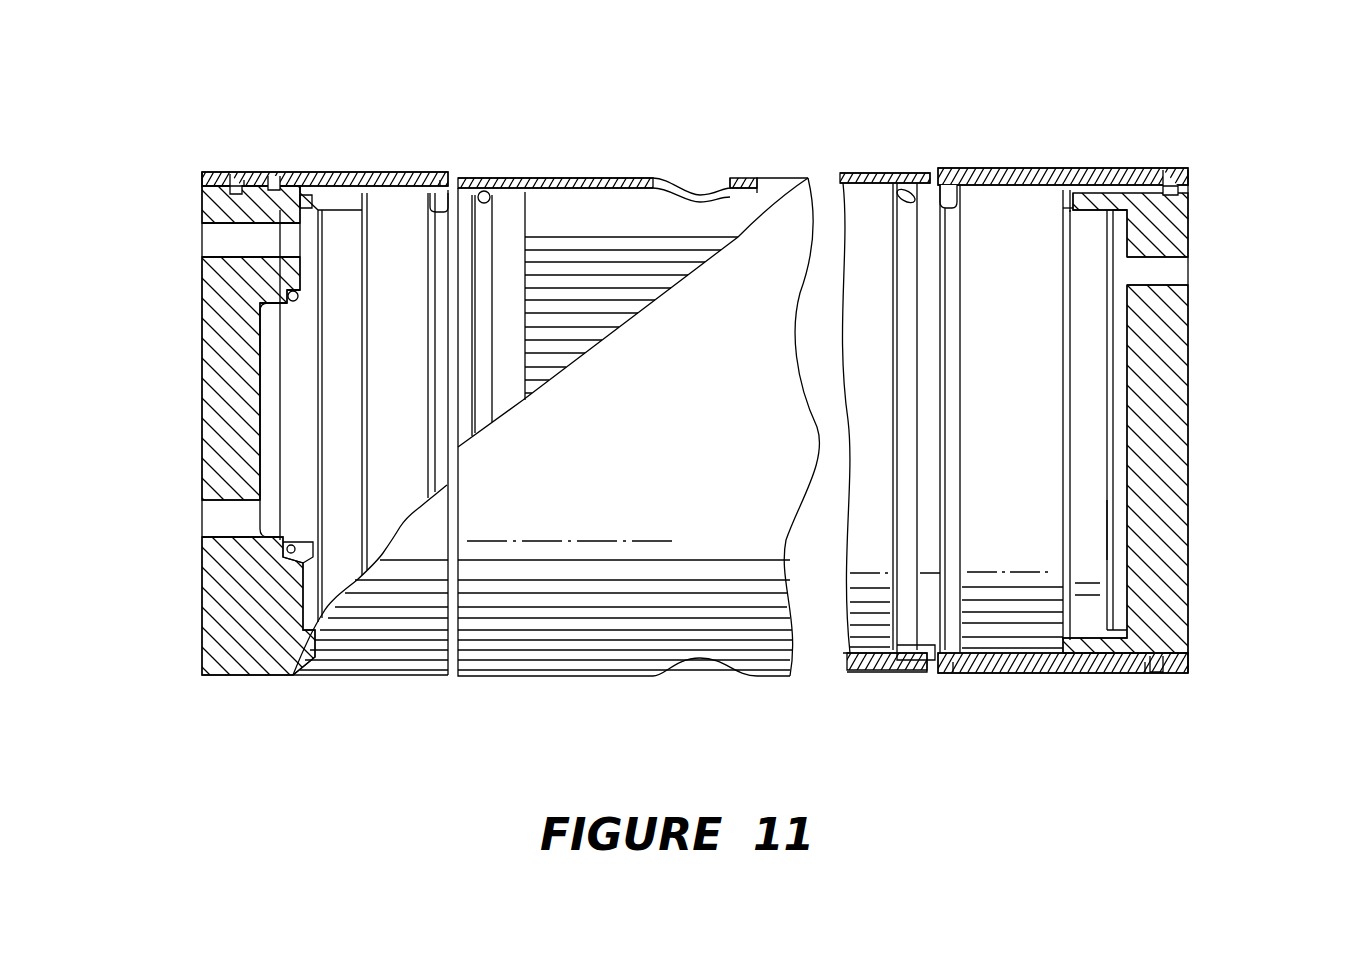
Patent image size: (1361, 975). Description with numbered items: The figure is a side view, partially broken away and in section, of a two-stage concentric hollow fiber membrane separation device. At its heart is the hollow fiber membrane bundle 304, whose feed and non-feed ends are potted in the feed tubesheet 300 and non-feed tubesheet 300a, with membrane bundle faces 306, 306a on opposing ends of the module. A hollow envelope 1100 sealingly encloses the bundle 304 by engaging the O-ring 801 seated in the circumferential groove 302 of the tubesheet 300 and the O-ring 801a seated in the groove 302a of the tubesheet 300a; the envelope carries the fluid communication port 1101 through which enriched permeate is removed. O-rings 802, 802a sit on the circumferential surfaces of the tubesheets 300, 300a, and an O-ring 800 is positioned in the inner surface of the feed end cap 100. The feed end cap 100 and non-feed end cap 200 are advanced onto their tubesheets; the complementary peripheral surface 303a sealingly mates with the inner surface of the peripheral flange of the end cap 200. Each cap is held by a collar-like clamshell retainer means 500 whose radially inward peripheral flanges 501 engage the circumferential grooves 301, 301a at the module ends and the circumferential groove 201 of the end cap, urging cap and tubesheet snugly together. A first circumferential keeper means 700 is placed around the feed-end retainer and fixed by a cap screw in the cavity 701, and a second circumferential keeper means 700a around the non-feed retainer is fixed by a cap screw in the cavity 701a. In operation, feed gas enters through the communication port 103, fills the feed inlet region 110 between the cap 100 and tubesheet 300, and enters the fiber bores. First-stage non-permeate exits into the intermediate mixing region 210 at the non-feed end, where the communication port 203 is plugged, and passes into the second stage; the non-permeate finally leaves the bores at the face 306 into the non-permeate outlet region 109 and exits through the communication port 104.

The feed end cap 100 is at (235, 425).
The communication port 103 is at (240, 240).
The communication port 104 is at (230, 515).
The non-permeate outlet region 109 is at (270, 474).
The feed inlet region 110 is at (310, 270).
The non-feed end cap 200 is at (1150, 440).
The circumferential groove 201 is at (1150, 675).
The communication port 203 is at (1150, 270).
The intermediate mixing region 210 is at (1110, 525).
The feed tubesheet 300 is at (406, 215).
The non-feed tubesheet 300a is at (1010, 232).
The circumferential groove 301 is at (440, 253).
The circumferential groove 301a is at (933, 620).
The circumferential groove 302 is at (527, 242).
The circumferential groove 302a is at (907, 273).
The complementary peripheral surface 303a is at (1090, 332).
The hollow fiber membrane bundle 304 is at (625, 260).
The membrane bundle face 306 is at (280, 385).
The membrane bundle face 306a is at (1110, 378).
The clamshell retainer means 500 is at (276, 183).
The peripheral flanges 501 is at (442, 178).
The circumferential keeper means 700 is at (240, 178).
The circumferential keeper means 700a is at (1150, 170).
The cavity 701 is at (232, 178).
The cavity 701a is at (1190, 170).
The O-ring 800 is at (290, 322).
The O-ring 801 is at (483, 273).
The O-ring 801a is at (910, 190).
The O-ring 802 is at (352, 200).
The O-ring 802a is at (1075, 208).
The hollow envelope 1100 is at (767, 240).
The communication port 1101 is at (703, 190).